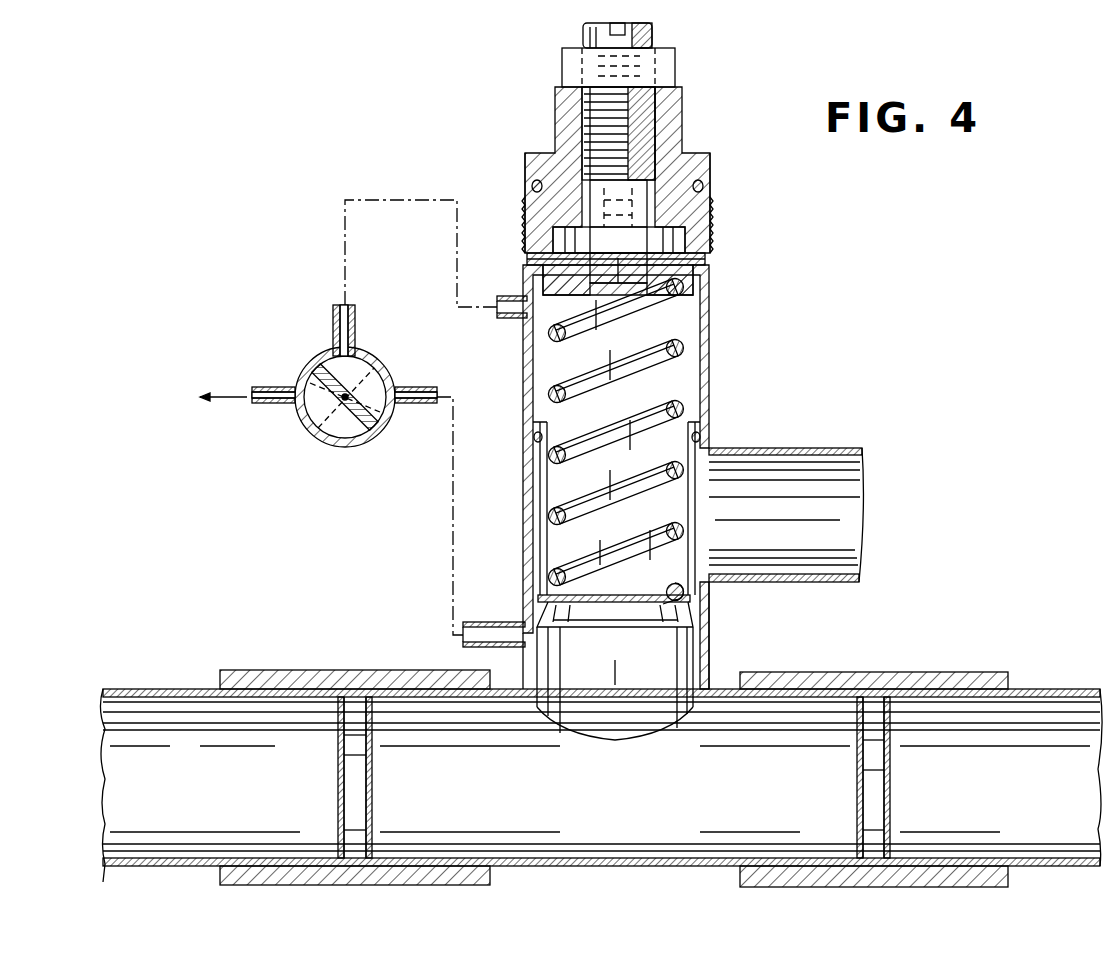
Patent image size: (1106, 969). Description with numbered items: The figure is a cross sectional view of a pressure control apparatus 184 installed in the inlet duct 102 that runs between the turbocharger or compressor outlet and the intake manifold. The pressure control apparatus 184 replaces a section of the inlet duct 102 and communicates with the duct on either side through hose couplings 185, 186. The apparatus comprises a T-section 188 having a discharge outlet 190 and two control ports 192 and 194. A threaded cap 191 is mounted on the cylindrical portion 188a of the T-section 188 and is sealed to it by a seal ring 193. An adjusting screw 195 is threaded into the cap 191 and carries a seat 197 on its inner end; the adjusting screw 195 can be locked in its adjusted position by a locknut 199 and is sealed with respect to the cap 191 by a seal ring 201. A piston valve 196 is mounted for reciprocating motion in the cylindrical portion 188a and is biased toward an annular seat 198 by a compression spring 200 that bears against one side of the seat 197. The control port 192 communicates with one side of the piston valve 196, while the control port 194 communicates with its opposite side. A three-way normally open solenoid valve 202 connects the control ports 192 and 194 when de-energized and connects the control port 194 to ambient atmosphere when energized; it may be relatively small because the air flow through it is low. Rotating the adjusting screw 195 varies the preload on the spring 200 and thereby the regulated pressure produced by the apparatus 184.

The inlet duct 102 is at (165, 688).
The pressure control apparatus 184 is at (767, 391).
The hose coupling 185 is at (324, 670).
The hose coupling 186 is at (904, 672).
The T-section 188 is at (718, 689).
The cylindrical portion 188a is at (709, 336).
The discharge outlet 190 is at (846, 449).
The threaded cap 191 is at (682, 130).
The control port 192 is at (493, 622).
The seal ring 193 is at (709, 187).
The control port 194 is at (503, 296).
The adjusting screw 195 is at (583, 28).
The piston valve 196 is at (700, 505).
The seat 197 is at (705, 272).
The annular seat 198 is at (703, 615).
The locknut 199 is at (670, 52).
The compression spring 200 is at (690, 395).
The seal ring 201 is at (688, 186).
The three-way normally open solenoid valve 202 is at (315, 361).